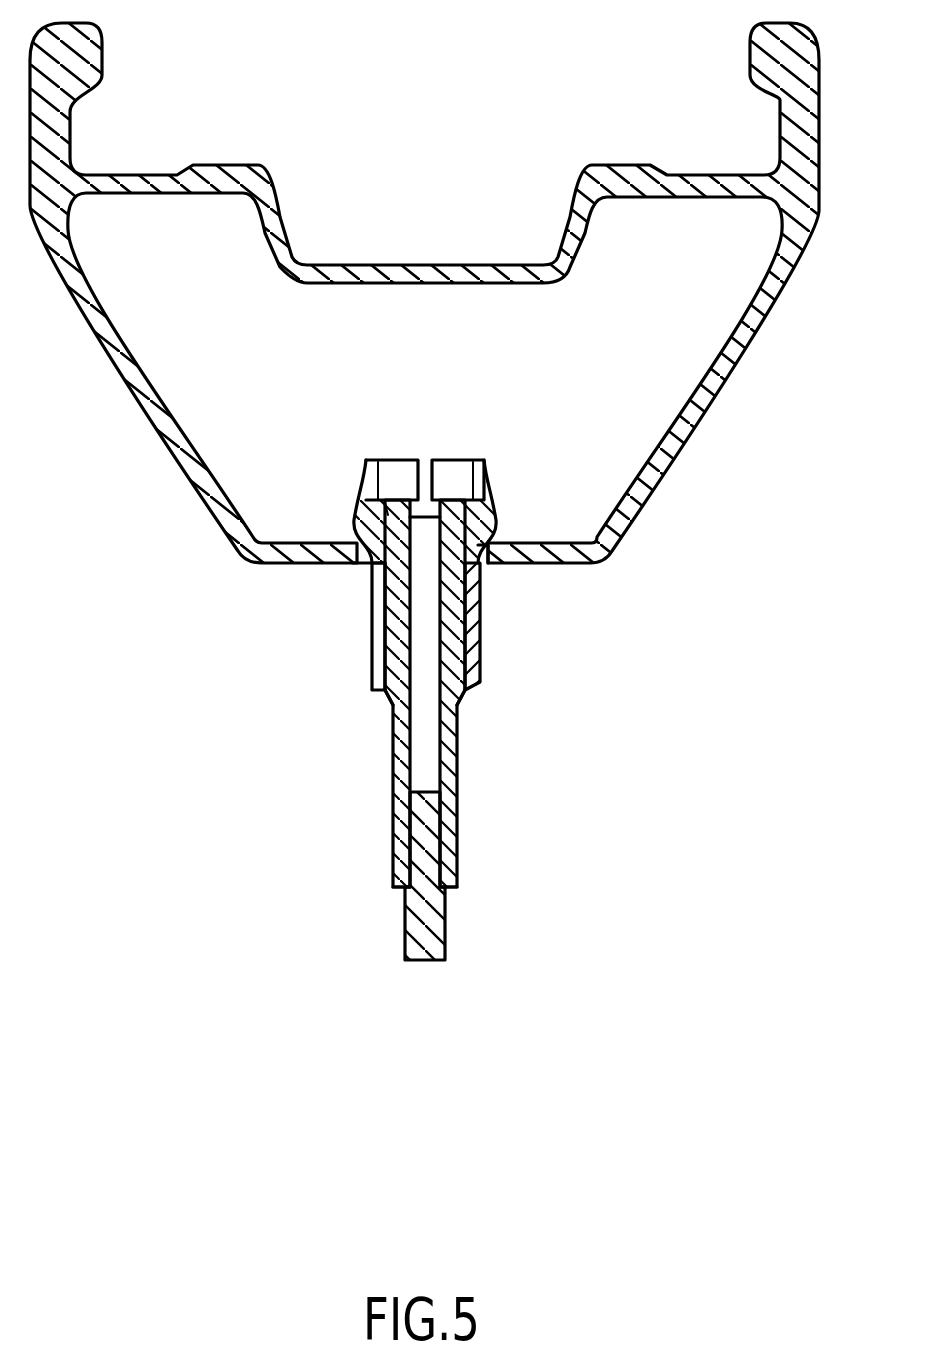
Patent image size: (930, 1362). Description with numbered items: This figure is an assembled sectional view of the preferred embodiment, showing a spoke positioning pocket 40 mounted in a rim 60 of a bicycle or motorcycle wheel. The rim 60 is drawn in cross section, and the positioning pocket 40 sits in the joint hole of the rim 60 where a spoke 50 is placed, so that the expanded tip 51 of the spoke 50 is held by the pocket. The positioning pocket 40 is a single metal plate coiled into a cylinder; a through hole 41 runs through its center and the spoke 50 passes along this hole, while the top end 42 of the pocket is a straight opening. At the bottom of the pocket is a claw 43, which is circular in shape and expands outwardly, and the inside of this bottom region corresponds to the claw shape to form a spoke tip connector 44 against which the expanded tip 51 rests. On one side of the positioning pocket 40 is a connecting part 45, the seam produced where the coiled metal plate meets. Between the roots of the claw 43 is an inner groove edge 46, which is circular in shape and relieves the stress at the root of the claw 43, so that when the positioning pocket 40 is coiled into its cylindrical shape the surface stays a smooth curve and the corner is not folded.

The positioning pocket 40 is at (364, 635).
The through hole 41 is at (456, 476).
The top end 42 is at (473, 689).
The claw 43 is at (360, 514).
The spoke tip connector 44 is at (470, 508).
The connecting part 45 is at (372, 662).
The inner groove edge 46 is at (360, 560).
The spoke 50 is at (427, 926).
The expanded tip 51 is at (387, 517).
The rim 60 is at (703, 413).